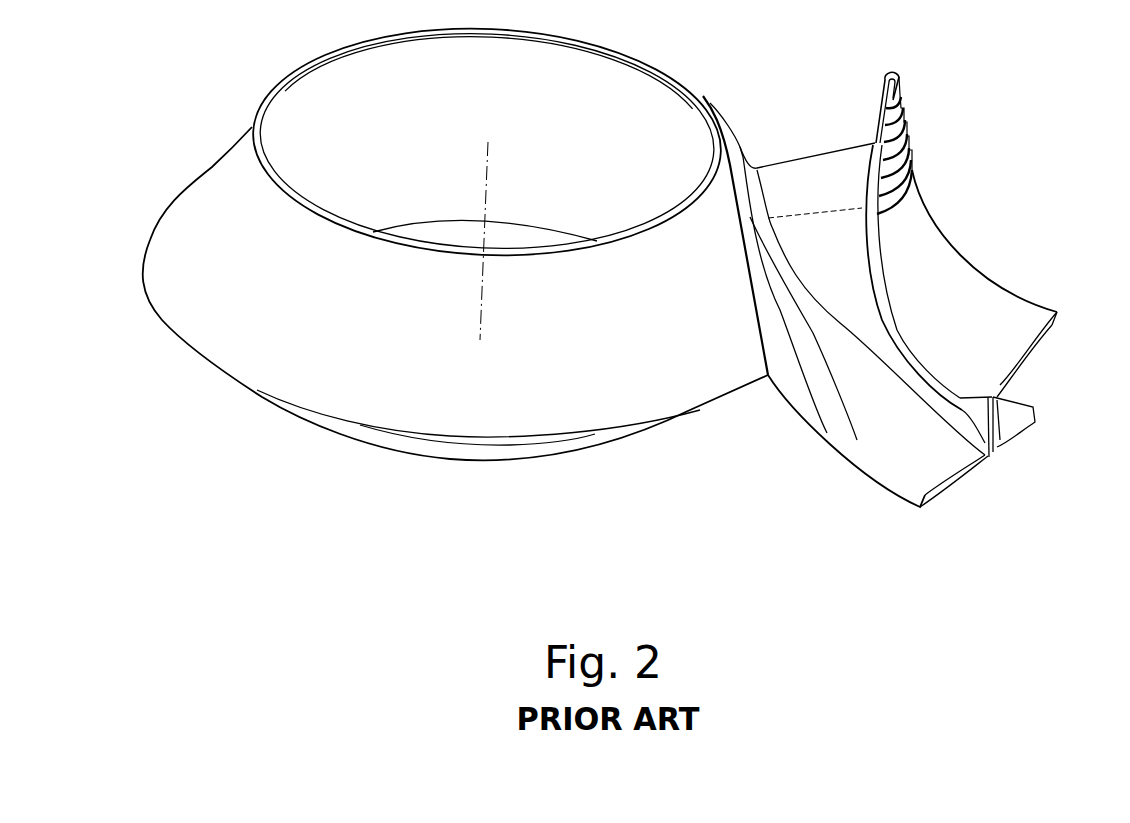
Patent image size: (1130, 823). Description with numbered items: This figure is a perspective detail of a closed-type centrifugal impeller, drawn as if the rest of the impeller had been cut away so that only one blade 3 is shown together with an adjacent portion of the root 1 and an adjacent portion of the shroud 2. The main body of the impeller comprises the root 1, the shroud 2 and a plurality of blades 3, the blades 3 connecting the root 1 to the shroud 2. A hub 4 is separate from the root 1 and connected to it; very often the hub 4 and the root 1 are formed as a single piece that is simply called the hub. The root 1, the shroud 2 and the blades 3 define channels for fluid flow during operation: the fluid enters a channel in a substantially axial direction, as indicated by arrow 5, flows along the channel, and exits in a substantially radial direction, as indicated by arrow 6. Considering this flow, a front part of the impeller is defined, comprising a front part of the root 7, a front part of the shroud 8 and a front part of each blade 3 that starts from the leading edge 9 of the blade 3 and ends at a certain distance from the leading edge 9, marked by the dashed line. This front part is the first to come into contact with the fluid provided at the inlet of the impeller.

The root 1 is at (836, 438).
The shroud 2 is at (975, 292).
The blade 3 is at (802, 177).
The hub 4 is at (205, 318).
The arrow 5 is at (803, 81).
The arrow 6 is at (995, 524).
The front part of the root 7 is at (700, 88).
The front part of the shroud 8 is at (900, 68).
The leading edge 9 is at (852, 140).